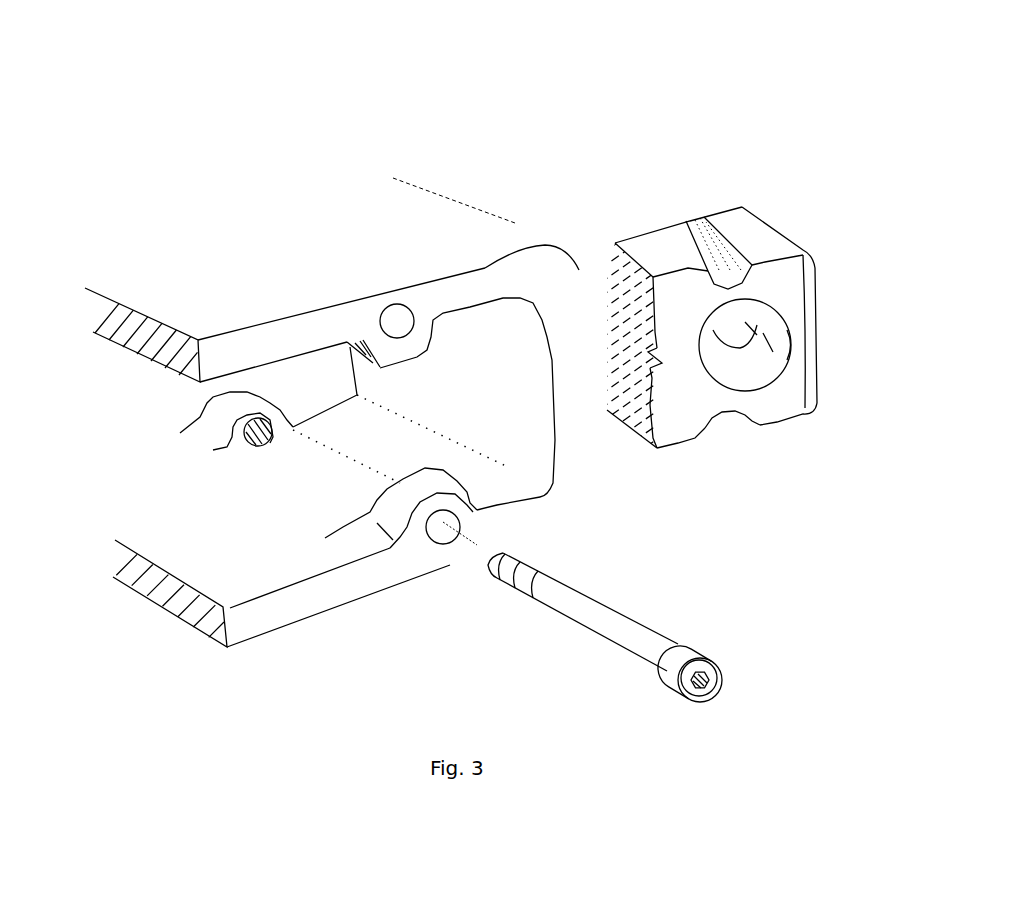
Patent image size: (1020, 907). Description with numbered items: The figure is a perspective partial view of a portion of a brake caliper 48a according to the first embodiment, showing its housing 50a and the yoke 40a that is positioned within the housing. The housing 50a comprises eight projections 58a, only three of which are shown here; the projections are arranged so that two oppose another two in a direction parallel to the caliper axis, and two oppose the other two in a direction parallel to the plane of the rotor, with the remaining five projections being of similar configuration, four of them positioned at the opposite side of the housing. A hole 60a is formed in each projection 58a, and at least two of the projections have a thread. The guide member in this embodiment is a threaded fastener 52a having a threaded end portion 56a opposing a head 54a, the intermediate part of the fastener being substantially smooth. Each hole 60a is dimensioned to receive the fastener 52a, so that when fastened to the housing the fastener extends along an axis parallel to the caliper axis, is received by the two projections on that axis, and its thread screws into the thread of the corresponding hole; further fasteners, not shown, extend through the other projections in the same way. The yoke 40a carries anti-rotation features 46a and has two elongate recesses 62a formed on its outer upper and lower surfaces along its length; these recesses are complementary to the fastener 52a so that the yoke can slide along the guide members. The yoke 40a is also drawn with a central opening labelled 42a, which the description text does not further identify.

The yoke 40a is at (768, 172).
The bore 42a is at (737, 370).
The anti-rotation features 46a is at (697, 350).
The brake caliper 48a is at (641, 97).
The housing 50a is at (505, 277).
The threaded fastener 52a is at (563, 600).
The head 54a is at (688, 648).
The threaded end portion 56a is at (517, 558).
The projections 58a is at (220, 417).
The hole 60a is at (398, 320).
The elongate recesses 62a is at (702, 250).